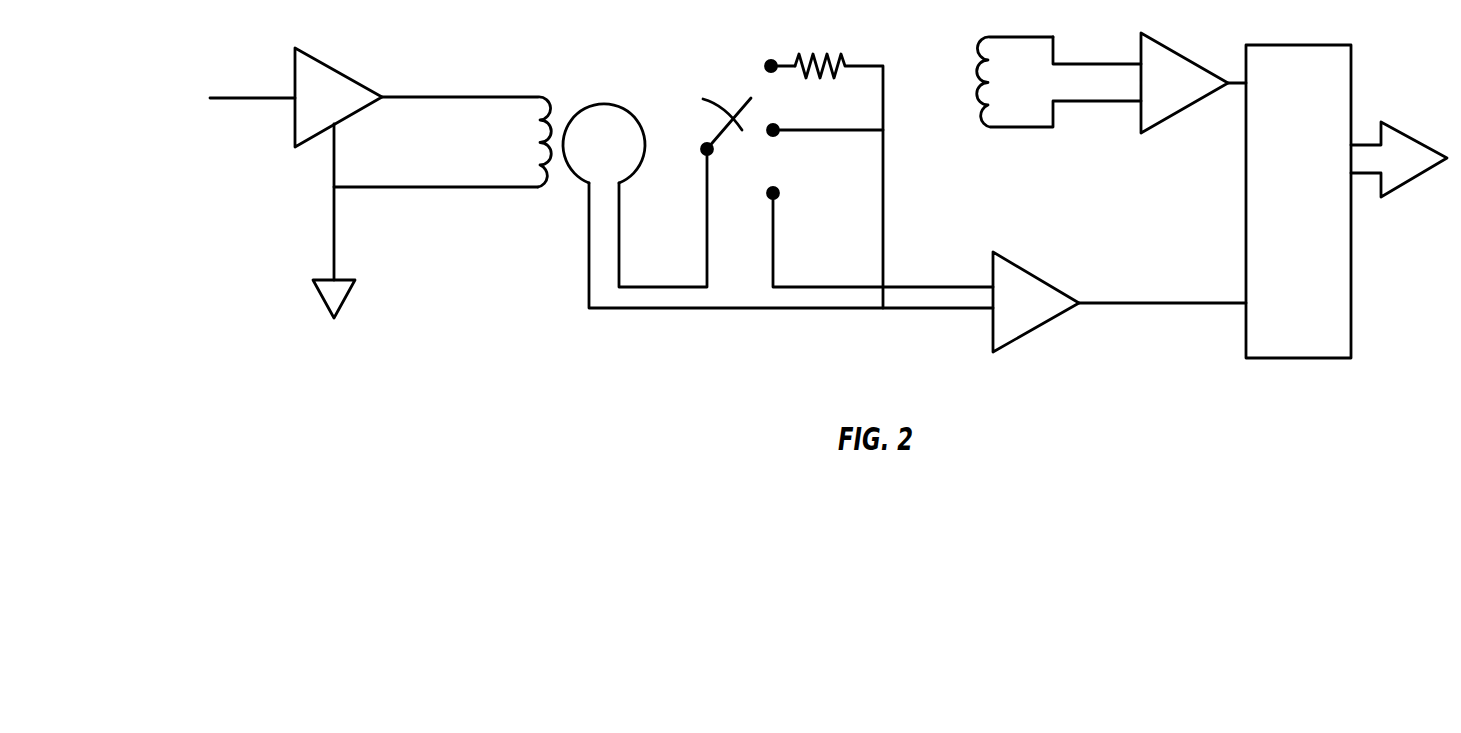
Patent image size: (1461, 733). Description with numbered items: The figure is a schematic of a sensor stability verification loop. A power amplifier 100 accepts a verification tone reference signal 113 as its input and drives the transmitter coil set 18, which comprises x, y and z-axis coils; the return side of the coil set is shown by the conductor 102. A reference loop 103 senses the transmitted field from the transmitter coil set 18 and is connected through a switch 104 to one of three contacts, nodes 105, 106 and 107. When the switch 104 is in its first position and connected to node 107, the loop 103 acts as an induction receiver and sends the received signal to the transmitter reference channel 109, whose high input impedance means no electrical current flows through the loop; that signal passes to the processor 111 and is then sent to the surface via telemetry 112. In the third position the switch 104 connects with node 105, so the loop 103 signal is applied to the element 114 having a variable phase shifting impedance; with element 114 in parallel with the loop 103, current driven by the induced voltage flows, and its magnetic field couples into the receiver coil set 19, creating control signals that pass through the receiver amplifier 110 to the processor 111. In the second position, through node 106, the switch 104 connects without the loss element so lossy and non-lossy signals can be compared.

The power amplifier 100 is at (330, 63).
The transmitter coil set 18 is at (443, 97).
The return conductor 102 is at (485, 187).
The reference loop 103 is at (604, 104).
The switch 104 is at (737, 152).
The node 105 is at (771, 66).
The switch contact 106 is at (774, 129).
The node 107 is at (774, 192).
The element having variable phase shifting impedance 114 is at (820, 55).
The receiver coil set 19 is at (1010, 37).
The amplifier 110 is at (1153, 38).
The processor 111 is at (1285, 360).
The telemetry 112 is at (1365, 142).
The transmitter reference channel 109 is at (1033, 329).
The verification tone reference signal 113 is at (248, 98).